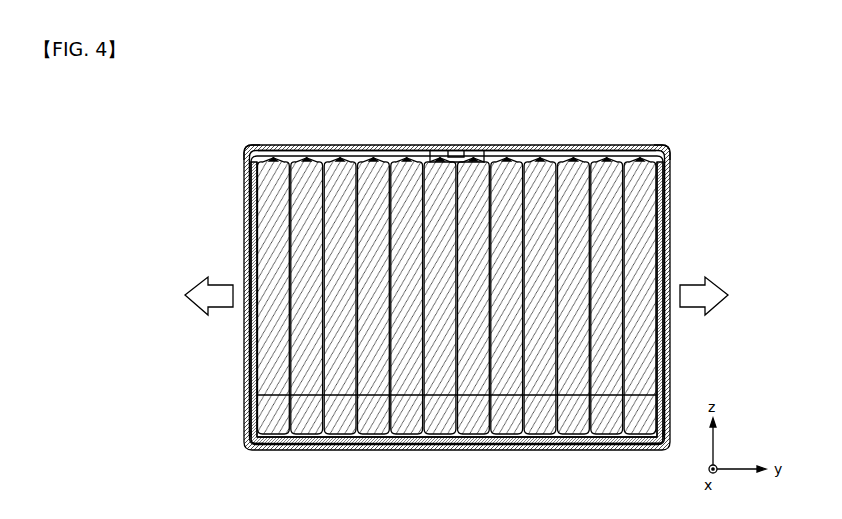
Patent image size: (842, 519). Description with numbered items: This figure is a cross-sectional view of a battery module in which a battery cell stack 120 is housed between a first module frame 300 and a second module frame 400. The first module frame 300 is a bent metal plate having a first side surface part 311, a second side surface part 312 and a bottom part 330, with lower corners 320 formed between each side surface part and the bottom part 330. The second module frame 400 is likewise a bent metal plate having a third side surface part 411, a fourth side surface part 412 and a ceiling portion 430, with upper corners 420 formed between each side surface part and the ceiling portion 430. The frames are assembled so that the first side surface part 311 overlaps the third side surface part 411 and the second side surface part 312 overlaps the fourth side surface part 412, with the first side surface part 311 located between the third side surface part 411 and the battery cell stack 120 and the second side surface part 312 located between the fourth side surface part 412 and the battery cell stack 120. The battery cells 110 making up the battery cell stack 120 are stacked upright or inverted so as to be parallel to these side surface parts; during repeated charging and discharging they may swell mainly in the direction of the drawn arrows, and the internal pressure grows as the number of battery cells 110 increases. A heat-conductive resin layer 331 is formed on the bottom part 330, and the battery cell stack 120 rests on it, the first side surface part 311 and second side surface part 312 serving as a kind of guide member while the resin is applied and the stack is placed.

The battery cell 110 is at (648, 352).
The battery cell stack 120 is at (465, 400).
The first module frame 300 is at (456, 329).
The first side surface part 311 is at (253, 190).
The second side surface part 312 is at (662, 190).
The lower corner 320 is at (247, 448).
The bottom part 330 is at (383, 447).
The heat-conductive resin layer 331 is at (612, 442).
The second module frame 400 is at (456, 269).
The third side surface part 411 is at (248, 229).
The fourth side surface part 412 is at (666, 227).
The upper corner 420 is at (246, 146).
The ceiling portion 430 is at (395, 148).